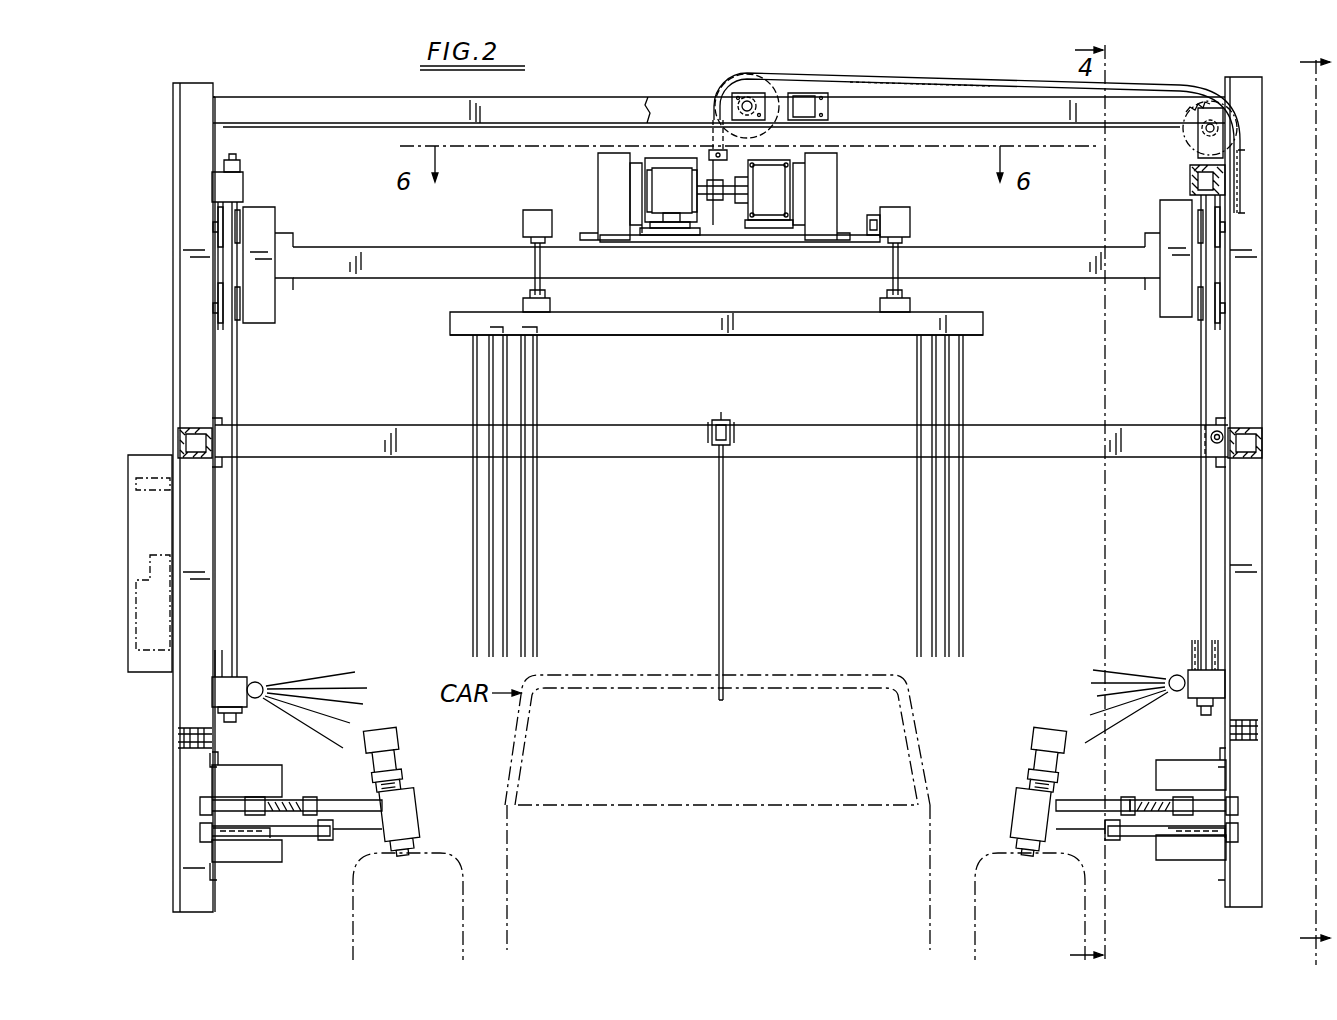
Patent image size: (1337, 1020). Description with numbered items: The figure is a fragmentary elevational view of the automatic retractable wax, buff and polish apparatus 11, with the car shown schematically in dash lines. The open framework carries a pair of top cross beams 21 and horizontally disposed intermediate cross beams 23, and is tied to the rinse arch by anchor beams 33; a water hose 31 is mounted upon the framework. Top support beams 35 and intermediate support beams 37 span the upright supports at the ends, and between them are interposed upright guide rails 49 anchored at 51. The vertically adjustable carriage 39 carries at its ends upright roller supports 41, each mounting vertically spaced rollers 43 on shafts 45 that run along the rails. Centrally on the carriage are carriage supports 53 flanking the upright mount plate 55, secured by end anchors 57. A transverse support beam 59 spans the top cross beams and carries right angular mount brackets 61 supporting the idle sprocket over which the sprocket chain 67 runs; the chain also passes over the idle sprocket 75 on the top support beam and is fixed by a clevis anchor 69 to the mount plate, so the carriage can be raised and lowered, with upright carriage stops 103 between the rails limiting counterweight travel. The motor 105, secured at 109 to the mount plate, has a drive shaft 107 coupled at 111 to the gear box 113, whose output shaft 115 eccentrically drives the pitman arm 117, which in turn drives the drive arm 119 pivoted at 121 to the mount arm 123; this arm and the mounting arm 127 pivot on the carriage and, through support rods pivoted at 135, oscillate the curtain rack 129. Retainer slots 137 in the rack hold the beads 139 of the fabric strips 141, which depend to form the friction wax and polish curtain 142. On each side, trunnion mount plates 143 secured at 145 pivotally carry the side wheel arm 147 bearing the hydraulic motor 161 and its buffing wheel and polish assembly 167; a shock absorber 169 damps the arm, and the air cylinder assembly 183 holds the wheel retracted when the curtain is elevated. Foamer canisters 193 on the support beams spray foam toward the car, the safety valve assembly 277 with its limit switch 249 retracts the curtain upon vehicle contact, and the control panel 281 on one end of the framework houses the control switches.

The automatic retractable wax, buff and polish apparatus 11 is at (1121, 84).
The top cross beams 21 is at (345, 108).
The intermediate cross beams 23 is at (409, 436).
The water hose 31 is at (1211, 433).
The anchor beams 33 is at (1262, 437).
The top support beams 35 is at (245, 187).
The intermediate support beams 37 is at (232, 690).
The carriage 39 is at (380, 252).
The upright roller supports 41 is at (258, 318).
The rollers 43 is at (218, 300).
The shafts 45 is at (218, 222).
The upright guide rails 49 is at (238, 520).
The anchors 51 is at (243, 170).
The carriage supports 53 is at (600, 162).
The mount plate 55 is at (631, 177).
The end anchors 57 is at (632, 190).
The transverse support beam 59 is at (806, 95).
The right angular mount brackets 61 is at (735, 102).
The sprocket chain 67 is at (905, 84).
The clevis anchor 69 is at (710, 153).
The idle sprocket 75 is at (1230, 128).
The upright carriage stops 103 is at (1220, 652).
The motor 105 is at (760, 160).
The drive shaft 107 is at (727, 200).
The motor securing means 109 is at (780, 228).
The coupling 111 is at (711, 198).
The gear box 113 is at (674, 190).
The output shaft 115 is at (648, 223).
The pitman arm 117 is at (665, 235).
The drive arm 119 is at (757, 242).
The pivot connection 121 is at (873, 217).
The mount arm 123 is at (912, 217).
The mounting arm 127 is at (523, 217).
The curtain rack 129 is at (985, 313).
The pivotal connection 135 is at (550, 305).
The retainer slots 137 is at (530, 345).
The beads 139 is at (990, 322).
The fabric strips 141 is at (937, 525).
The wax and polish curtain 142 is at (986, 496).
The trunnion mount plates 143 is at (1180, 768).
The securing means 145 is at (1218, 864).
The side wheel arm 147 is at (1068, 800).
The hydraulic motor 161 is at (1032, 722).
The buffing wheel and polish assembly 167 is at (353, 906).
The shock absorber 169 is at (288, 800).
The air cylinder assembly 183 is at (255, 845).
The foamer canisters 193 is at (262, 684).
The limit switch 249 is at (724, 563).
The limit switch operated safety valve assembly 277 is at (728, 442).
The control panel 281 is at (152, 455).